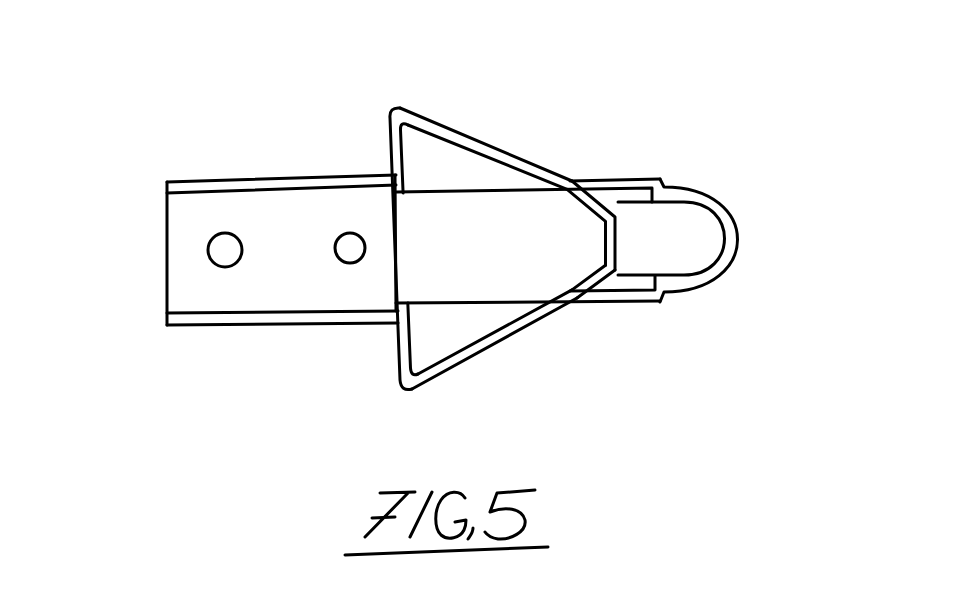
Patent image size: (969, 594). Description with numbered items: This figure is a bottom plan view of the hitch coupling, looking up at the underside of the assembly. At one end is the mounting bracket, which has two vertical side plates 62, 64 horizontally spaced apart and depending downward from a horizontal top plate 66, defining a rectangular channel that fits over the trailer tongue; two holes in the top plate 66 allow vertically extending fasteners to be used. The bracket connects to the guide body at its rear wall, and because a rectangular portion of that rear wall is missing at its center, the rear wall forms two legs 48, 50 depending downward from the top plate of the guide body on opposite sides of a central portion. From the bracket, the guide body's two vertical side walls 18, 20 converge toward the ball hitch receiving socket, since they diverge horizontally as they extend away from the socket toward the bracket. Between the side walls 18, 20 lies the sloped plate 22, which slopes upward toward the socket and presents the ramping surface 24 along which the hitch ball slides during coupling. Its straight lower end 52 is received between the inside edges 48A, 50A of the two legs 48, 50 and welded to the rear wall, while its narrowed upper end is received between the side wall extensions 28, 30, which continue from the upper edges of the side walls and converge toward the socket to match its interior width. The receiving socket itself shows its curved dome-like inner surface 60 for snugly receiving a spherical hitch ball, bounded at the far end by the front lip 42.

The side wall 18 is at (490, 348).
The side wall 20 is at (488, 221).
The sloped plate 22 is at (430, 213).
The ramping surface 24 is at (499, 218).
The side wall extension 28 is at (597, 283).
The side wall extension 30 is at (602, 205).
The front lip 42 is at (736, 228).
The leg 48 is at (364, 240).
The inside edge 48A is at (400, 307).
The leg 50 is at (391, 151).
The inside edge 50A is at (398, 196).
The lower end of the sloped plate 52 is at (392, 238).
The inner surface 60 is at (680, 237).
The side plate 62 is at (253, 321).
The side plate 64 is at (223, 181).
The top plate 66 is at (205, 283).